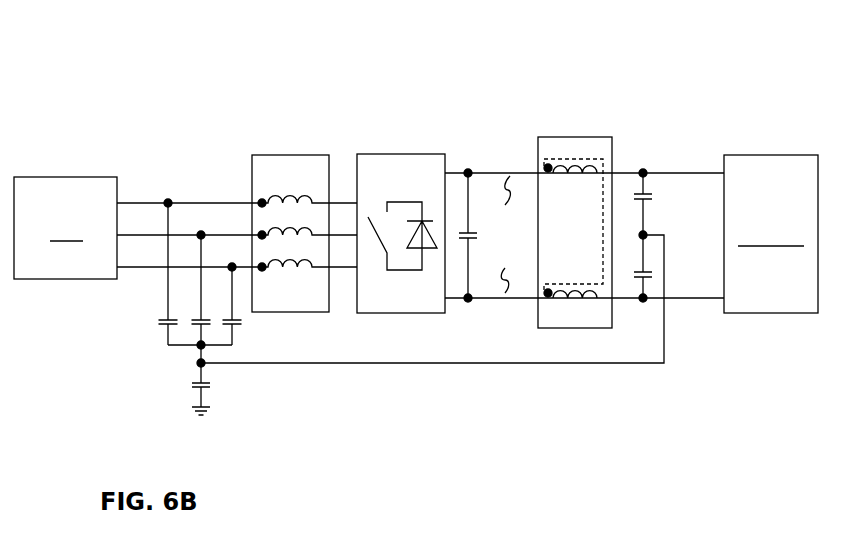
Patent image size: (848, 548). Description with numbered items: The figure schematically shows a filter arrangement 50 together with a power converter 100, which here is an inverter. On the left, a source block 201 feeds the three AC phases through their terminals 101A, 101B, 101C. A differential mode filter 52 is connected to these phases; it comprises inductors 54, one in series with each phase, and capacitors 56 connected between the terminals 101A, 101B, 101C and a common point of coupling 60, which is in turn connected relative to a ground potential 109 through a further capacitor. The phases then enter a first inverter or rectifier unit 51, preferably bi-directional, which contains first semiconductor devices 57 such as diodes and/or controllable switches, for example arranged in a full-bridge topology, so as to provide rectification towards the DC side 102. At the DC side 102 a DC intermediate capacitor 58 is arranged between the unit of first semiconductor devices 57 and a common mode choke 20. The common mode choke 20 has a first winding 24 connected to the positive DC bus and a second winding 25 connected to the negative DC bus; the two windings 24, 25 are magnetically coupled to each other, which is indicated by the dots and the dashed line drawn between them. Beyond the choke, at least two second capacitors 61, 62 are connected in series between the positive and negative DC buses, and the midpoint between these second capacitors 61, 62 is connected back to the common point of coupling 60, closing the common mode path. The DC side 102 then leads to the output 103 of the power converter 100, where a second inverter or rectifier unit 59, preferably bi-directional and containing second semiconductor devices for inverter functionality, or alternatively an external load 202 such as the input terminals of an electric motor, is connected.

The power converter 100 is at (112, 70).
The AC source / grid 201 is at (169, 238).
The differential mode filter 52 is at (213, 118).
The terminal of AC phase 101A is at (240, 203).
The terminal of AC phase 101B is at (220, 235).
The terminal of AC phase 101C is at (152, 268).
The capacitors 56 is at (148, 323).
The ground potential 109 is at (226, 392).
The filter arrangement 50 is at (370, 77).
The inductors 54 is at (298, 142).
The first inverter or rectifier unit 51 is at (450, 107).
The first semiconductor devices 57 is at (402, 193).
The DC intermediate capacitor 58 is at (478, 220).
The first winding 24 is at (522, 173).
The second winding 25 is at (522, 298).
The common mode choke 20 is at (573, 102).
The DC side 102 is at (615, 75).
The second capacitor 61 is at (655, 191).
The second capacitor 62 is at (655, 275).
The common point of coupling 60 is at (438, 363).
The output 103 is at (707, 143).
The second inverter or rectifier unit 59 is at (771, 234).
The DC load 202 is at (771, 234).